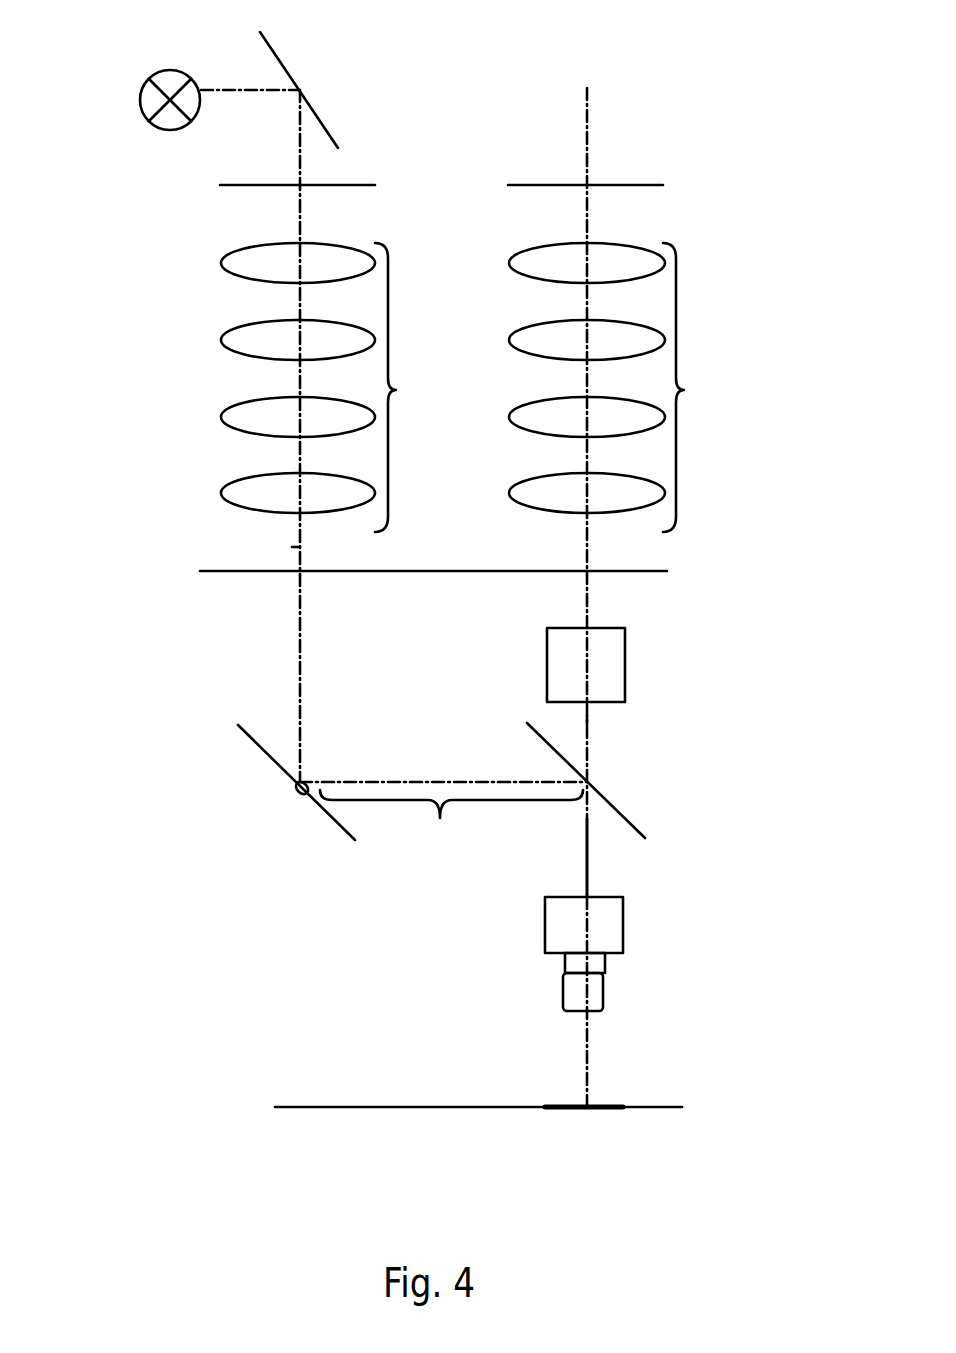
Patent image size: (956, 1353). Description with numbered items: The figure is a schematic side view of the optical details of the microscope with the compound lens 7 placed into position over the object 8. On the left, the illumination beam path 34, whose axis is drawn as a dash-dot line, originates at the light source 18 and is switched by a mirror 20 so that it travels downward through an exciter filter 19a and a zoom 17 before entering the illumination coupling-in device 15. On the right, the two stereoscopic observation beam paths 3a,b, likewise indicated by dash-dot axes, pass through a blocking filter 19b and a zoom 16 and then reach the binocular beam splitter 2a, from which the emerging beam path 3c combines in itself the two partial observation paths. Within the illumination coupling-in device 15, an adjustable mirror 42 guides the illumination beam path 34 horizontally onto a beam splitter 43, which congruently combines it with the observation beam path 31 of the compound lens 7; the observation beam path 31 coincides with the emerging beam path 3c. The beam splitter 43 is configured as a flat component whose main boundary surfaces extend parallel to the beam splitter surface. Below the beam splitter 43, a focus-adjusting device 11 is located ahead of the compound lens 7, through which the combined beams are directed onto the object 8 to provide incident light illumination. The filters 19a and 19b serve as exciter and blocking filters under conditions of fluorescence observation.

The light source 18 is at (170, 80).
The mirror 20 is at (313, 107).
The exciter filter 19a is at (268, 190).
The blocking filter 19b is at (620, 185).
The zoom in illumination beam path 17 is at (343, 387).
The zoom in observation beam path 16 is at (623, 387).
The illumination beam path 34 is at (295, 547).
The left and right partial observation beam paths 3a,b is at (587, 552).
The binocular beam splitter 2a is at (570, 680).
The beam path emerging from beam splitter 3c is at (587, 725).
The adjustable mirror 42 is at (272, 763).
The illumination coupling-in device 15 is at (451, 839).
The beam splitter 43 is at (618, 810).
The observation beam path 31 is at (587, 819).
The focus-adjusting device 11 is at (603, 920).
The compound lens 7 is at (563, 990).
The object 8 is at (600, 1103).